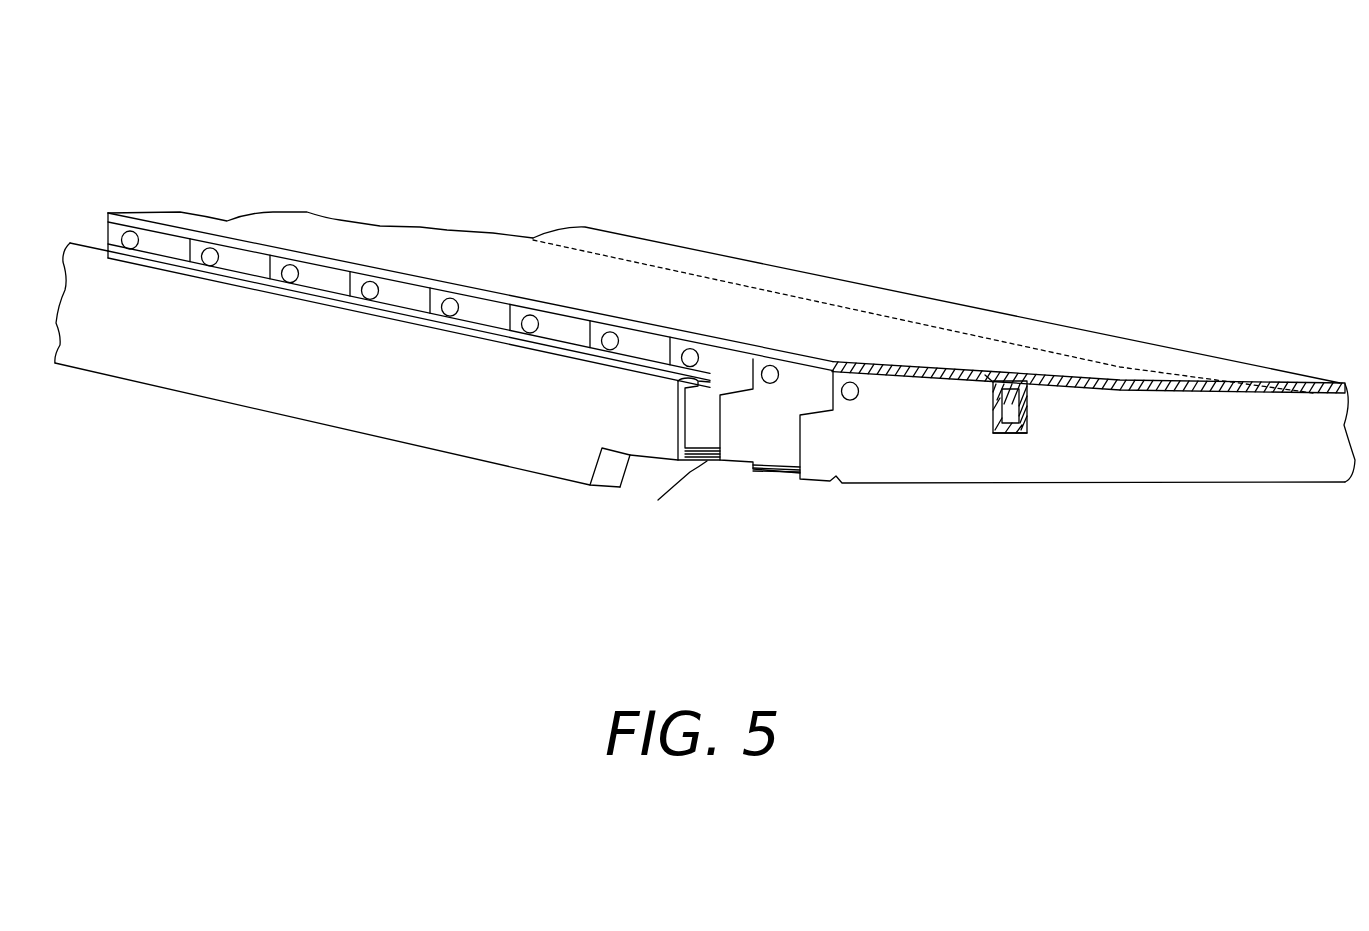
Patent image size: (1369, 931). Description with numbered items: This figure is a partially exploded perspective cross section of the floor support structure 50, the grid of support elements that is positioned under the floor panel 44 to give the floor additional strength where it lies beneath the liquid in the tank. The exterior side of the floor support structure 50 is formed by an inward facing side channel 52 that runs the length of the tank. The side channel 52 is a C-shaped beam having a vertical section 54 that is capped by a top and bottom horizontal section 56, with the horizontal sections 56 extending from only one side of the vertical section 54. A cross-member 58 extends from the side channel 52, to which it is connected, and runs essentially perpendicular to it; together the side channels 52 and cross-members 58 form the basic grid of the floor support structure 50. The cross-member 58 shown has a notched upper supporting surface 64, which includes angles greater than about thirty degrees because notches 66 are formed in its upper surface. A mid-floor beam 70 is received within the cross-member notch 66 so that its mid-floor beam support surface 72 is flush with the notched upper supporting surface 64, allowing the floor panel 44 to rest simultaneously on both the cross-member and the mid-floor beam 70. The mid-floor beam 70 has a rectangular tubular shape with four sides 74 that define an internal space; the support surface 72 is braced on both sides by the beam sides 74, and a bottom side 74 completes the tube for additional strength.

The floor panel 44 is at (452, 253).
The floor support structure 50 is at (646, 592).
The side channel 52 is at (212, 347).
The vertical section 54 is at (643, 417).
The top and bottom horizontal section 56 is at (677, 383).
The cross-member 58 is at (1247, 443).
The notched upper supporting surface 64 is at (993, 380).
The notch 66 is at (1027, 400).
The mid-floor beam 70 is at (1010, 380).
The mid-floor beam support surface 72 is at (1017, 383).
The mid-floor beam side 74 is at (1027, 417).